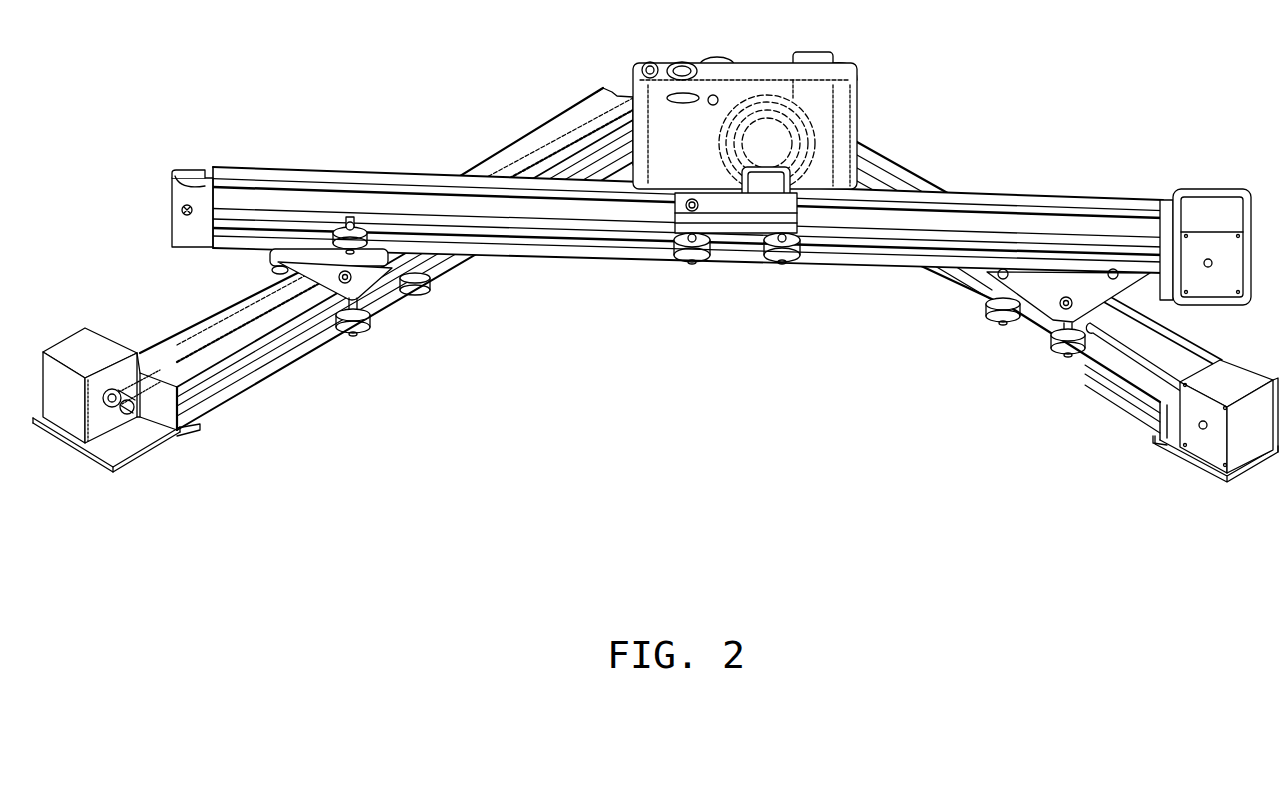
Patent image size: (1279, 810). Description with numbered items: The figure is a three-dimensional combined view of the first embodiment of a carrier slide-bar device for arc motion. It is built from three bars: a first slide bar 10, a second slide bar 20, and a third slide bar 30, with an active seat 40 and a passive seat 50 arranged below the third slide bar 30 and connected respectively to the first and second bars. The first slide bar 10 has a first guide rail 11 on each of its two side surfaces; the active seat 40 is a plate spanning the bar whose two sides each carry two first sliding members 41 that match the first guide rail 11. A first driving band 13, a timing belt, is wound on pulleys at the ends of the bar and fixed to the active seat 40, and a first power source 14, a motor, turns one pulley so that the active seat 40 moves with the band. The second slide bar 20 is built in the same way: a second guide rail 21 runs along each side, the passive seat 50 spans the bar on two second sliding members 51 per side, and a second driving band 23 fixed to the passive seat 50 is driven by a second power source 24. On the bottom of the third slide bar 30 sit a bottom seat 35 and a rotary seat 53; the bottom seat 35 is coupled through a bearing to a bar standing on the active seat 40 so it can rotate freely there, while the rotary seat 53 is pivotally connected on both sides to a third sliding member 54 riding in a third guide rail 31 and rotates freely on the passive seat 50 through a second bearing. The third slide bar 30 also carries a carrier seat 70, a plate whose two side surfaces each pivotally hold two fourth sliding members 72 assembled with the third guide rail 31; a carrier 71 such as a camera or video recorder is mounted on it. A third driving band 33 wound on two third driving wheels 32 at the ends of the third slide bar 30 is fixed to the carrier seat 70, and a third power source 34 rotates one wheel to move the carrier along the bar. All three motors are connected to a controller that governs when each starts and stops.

The first slide bar 10 is at (1058, 293).
The first guide rail 11 is at (1120, 363).
The first driving band 13 is at (1180, 347).
The first power source 14 is at (1213, 447).
The second slide bar 20 is at (386, 255).
The second guide rail 21 is at (293, 343).
The second driving band 23 is at (544, 143).
The second power source 24 is at (77, 347).
The third slide bar 30 is at (713, 210).
The third guide rail 31 is at (600, 237).
The third driving wheel 32 is at (183, 187).
The third driving band 33 is at (433, 190).
The third power source 34 is at (1210, 210).
The bottom seat 35 is at (1067, 283).
The active seat 40 is at (1068, 344).
The first sliding member 41 is at (1060, 360).
The passive seat 50 is at (367, 238).
The second sliding member 51 is at (435, 290).
The rotary seat 53 is at (322, 258).
The third sliding member 54 is at (370, 232).
The carrier seat 70 is at (727, 203).
The carrier 71 is at (818, 62).
The fourth sliding member 72 is at (790, 255).